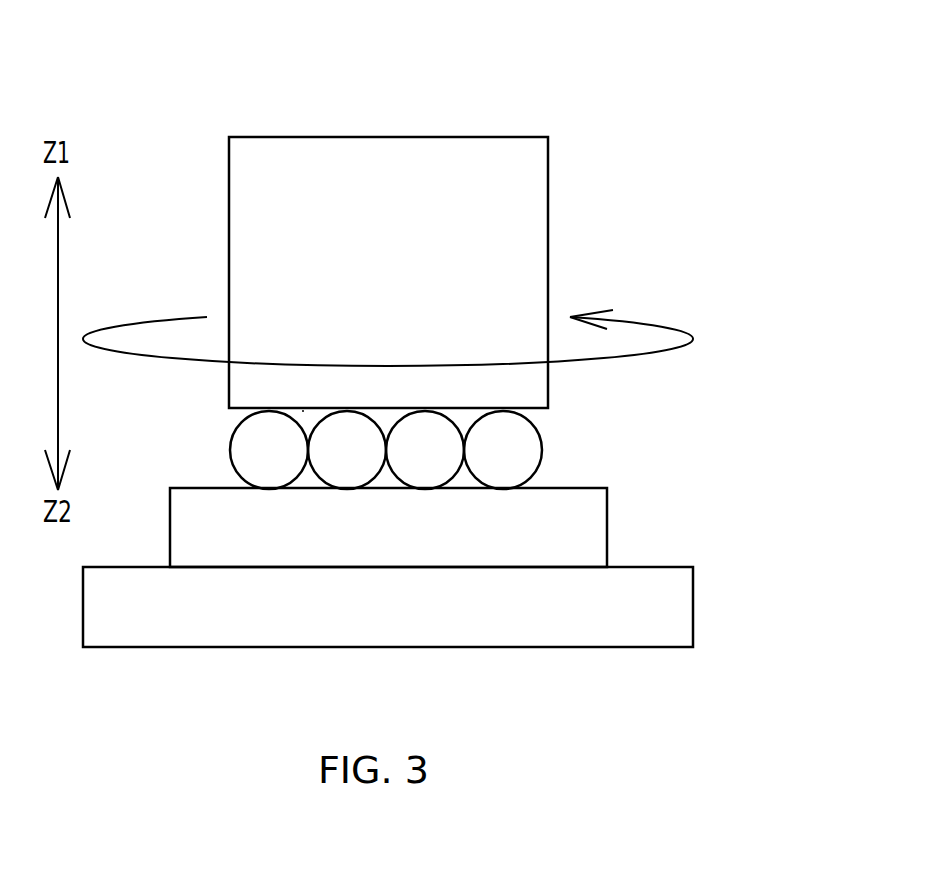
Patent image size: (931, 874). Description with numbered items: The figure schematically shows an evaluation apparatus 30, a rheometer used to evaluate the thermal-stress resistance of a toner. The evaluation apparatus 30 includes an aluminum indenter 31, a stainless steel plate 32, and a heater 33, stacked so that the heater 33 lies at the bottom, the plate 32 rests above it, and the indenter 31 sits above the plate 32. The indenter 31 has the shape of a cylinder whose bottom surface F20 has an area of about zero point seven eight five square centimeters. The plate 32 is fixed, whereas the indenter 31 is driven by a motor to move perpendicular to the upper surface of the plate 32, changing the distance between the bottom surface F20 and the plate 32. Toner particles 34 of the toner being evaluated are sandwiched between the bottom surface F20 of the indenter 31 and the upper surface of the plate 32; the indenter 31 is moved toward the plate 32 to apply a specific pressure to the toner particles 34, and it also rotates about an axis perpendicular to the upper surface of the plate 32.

The evaluation apparatus 30 is at (227, 82).
The indenter 31 is at (515, 195).
The toner particles 34 is at (527, 451).
The plate 32 is at (595, 538).
The heater 33 is at (680, 608).
The bottom surface F20 is at (303, 410).